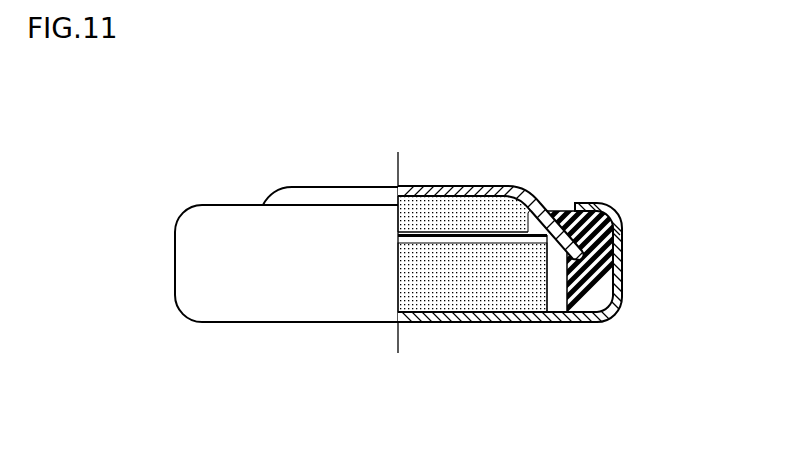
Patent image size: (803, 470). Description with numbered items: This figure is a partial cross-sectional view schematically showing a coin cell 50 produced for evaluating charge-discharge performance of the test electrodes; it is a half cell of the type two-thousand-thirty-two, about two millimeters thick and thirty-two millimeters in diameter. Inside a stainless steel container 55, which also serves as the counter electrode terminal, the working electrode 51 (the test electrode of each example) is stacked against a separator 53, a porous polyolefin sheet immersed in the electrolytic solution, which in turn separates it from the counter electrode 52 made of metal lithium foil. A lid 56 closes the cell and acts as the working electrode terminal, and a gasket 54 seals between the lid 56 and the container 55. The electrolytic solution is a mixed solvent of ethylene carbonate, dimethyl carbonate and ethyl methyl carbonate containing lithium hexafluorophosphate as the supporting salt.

The coin cell 50 is at (434, 242).
The working electrode 51 is at (452, 200).
The counter electrode 52 is at (482, 305).
The separator 53 is at (488, 240).
The gasket 54 is at (607, 240).
The container 55 is at (285, 310).
The lid 56 is at (338, 185).